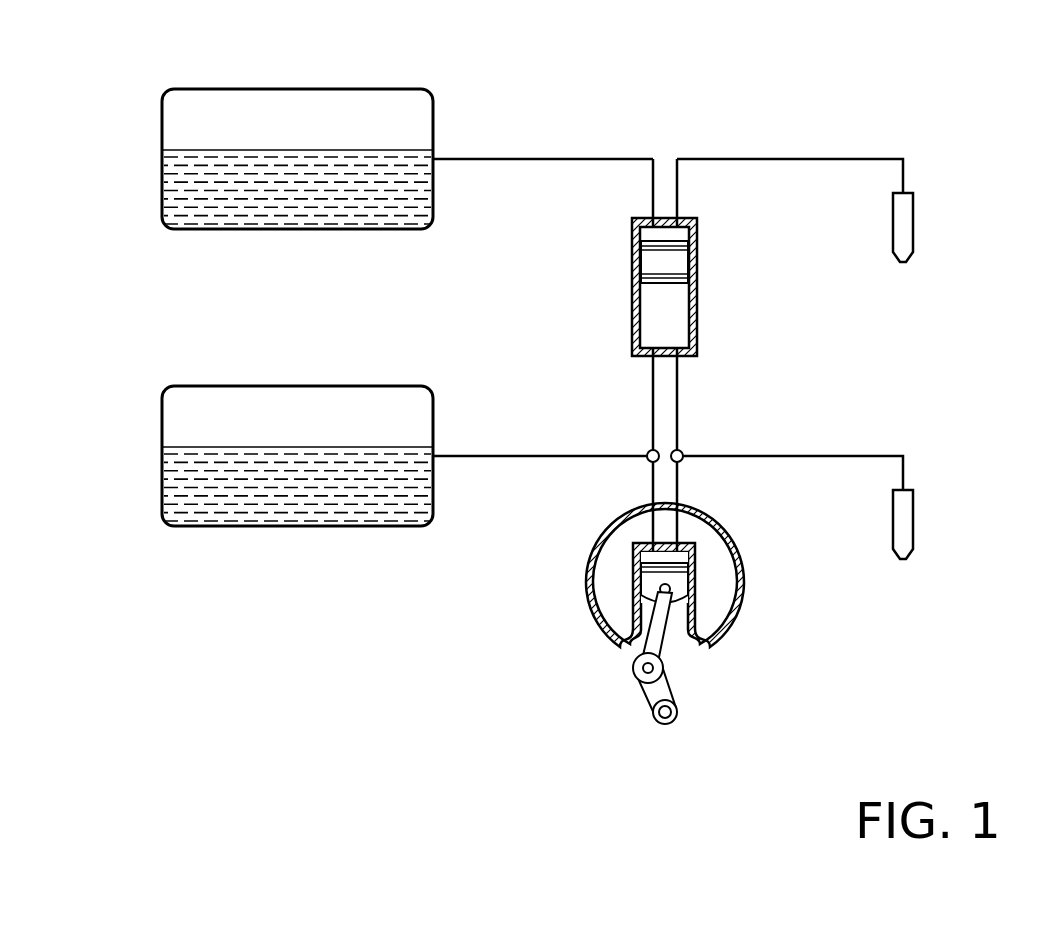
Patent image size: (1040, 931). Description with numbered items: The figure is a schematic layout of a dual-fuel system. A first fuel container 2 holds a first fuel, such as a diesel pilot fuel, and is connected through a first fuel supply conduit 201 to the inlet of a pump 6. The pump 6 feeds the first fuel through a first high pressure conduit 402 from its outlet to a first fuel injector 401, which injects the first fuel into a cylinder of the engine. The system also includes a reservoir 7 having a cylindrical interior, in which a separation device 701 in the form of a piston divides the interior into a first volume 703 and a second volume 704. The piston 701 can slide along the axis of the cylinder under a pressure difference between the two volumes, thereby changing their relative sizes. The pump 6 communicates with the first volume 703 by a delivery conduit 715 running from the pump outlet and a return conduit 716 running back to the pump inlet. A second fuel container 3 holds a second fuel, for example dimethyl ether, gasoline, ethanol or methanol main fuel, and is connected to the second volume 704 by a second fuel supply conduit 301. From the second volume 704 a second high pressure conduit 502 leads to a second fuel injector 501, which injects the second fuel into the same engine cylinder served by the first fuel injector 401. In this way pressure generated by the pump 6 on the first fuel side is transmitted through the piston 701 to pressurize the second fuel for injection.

The first fuel container 2 is at (293, 386).
The second fuel container 3 is at (293, 89).
The pump 6 is at (745, 710).
The reservoir 7 is at (717, 278).
The first fuel supply conduit 201 is at (538, 456).
The second fuel supply conduit 301 is at (538, 159).
The first fuel injector 401 is at (915, 519).
The first high pressure conduit 402 is at (795, 456).
The second fuel injector 501 is at (915, 222).
The second high pressure conduit 502 is at (795, 159).
The separation device 701 is at (665, 264).
The first volume 703 is at (665, 325).
The second volume 704 is at (667, 237).
The delivery conduit 715 is at (677, 405).
The return conduit 716 is at (653, 405).